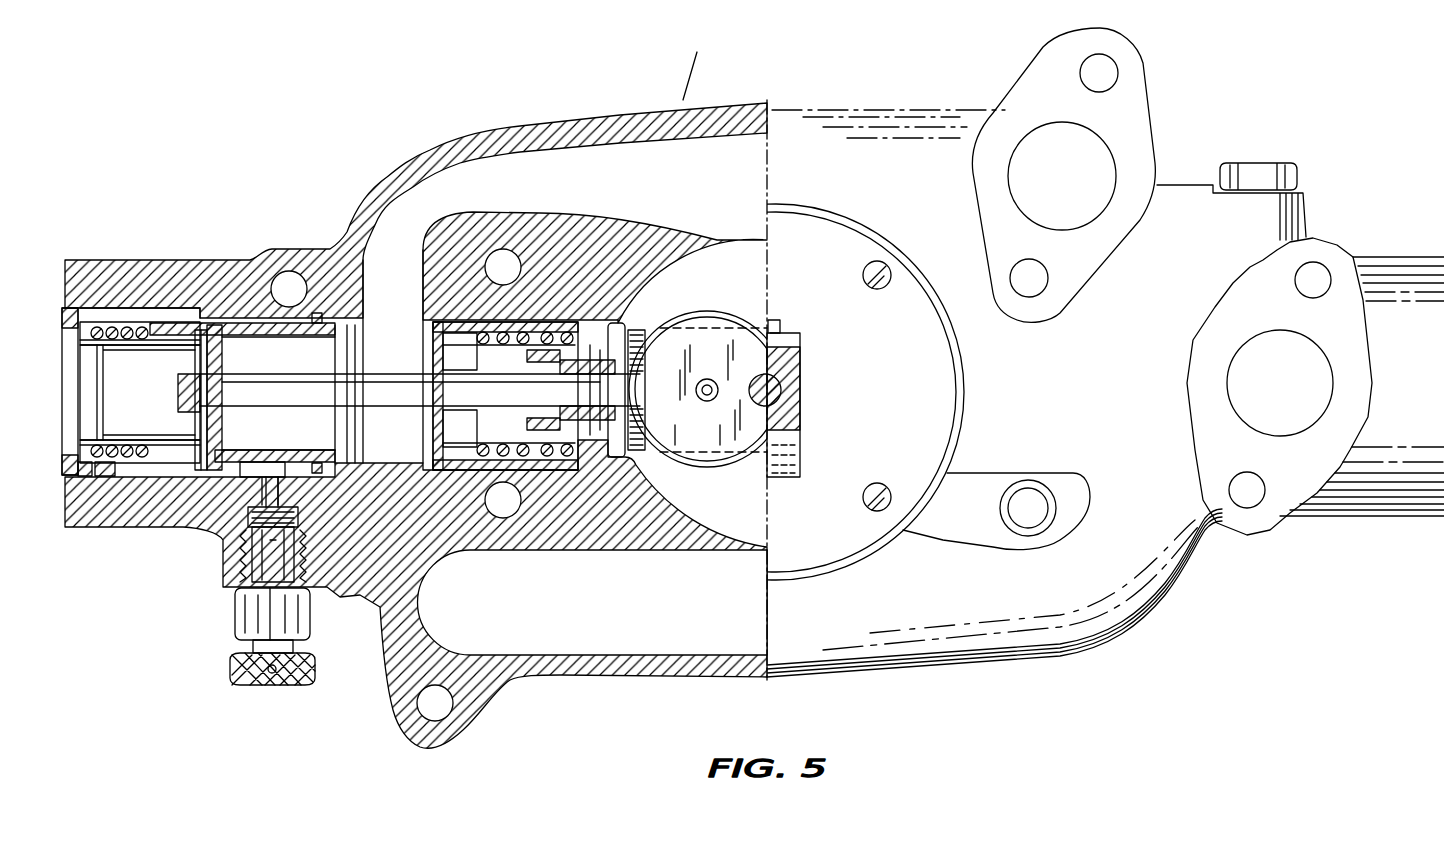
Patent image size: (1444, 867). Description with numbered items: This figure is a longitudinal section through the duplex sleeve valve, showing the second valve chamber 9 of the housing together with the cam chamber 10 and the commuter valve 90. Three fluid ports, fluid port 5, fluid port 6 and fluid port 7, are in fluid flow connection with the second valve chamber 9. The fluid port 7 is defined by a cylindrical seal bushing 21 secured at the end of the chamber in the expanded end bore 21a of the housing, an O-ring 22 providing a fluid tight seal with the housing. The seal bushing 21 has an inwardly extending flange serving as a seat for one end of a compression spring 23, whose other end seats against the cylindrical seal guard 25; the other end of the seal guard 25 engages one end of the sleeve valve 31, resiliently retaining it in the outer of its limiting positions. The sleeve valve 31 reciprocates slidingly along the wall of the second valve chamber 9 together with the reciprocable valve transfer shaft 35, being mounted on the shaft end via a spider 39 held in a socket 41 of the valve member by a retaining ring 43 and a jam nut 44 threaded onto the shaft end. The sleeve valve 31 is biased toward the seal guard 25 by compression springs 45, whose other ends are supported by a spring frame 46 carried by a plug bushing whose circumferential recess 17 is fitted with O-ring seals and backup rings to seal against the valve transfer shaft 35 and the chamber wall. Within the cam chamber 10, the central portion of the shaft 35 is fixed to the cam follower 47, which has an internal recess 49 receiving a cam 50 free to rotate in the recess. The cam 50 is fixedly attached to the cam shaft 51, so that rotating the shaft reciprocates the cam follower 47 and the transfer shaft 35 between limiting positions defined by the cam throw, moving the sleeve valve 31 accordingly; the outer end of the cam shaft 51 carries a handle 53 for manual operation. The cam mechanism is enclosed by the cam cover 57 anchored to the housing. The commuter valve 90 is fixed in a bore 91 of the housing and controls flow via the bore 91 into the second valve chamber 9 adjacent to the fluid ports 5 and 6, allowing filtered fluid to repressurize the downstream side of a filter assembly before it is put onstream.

The cam chamber 10 is at (748, 502).
The cam cover 57 is at (877, 344).
The fluid port 6 is at (398, 371).
The seal bushing 21 is at (63, 308).
The O-ring 22 is at (86, 477).
The expanded end bore 21a is at (108, 477).
The compression spring 23 is at (107, 327).
The seal guard 25 is at (170, 342).
The fluid port 7 is at (70, 403).
The jam nut 44 is at (180, 412).
The retaining ring 43 is at (198, 348).
The socket 41 is at (213, 337).
The spider 39 is at (278, 354).
The second valve chamber 9 is at (280, 370).
The sleeve valve 31 is at (250, 323).
The fluid port 5 is at (258, 467).
The valve transfer shaft 35 is at (263, 407).
The spring frame 46 is at (517, 340).
The compression spring 45 is at (507, 332).
The circumferential recess 17 is at (592, 421).
The cam follower 47 is at (616, 322).
The internal recess 49 is at (638, 352).
The cam 50 is at (710, 317).
The cam shaft 51 is at (785, 390).
The handle 53 is at (795, 408).
The bore 91 is at (243, 523).
The commuter valve 90 is at (215, 615).